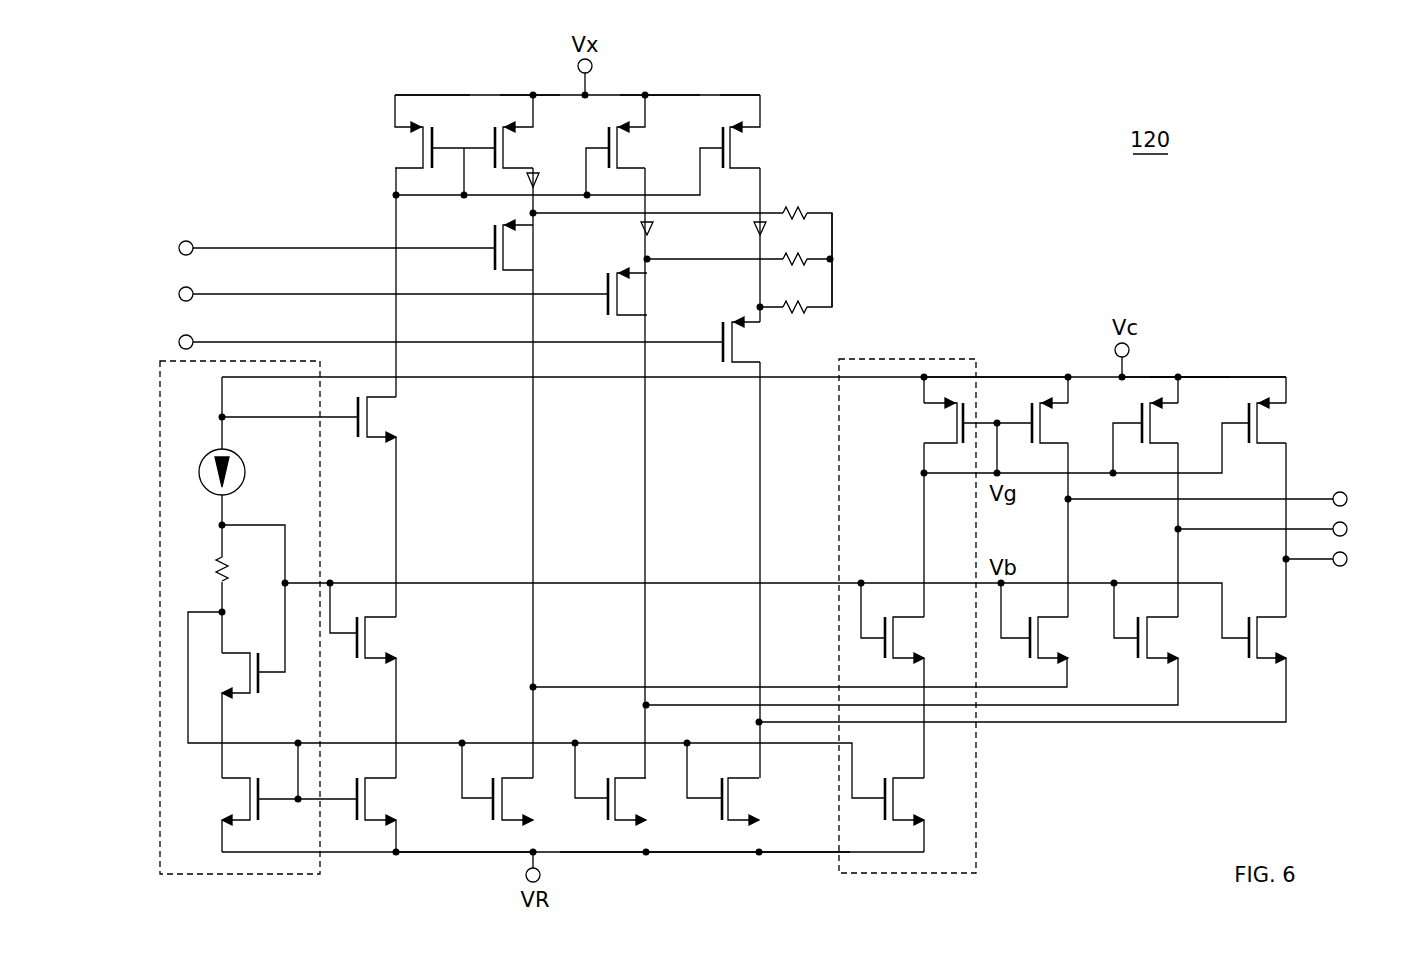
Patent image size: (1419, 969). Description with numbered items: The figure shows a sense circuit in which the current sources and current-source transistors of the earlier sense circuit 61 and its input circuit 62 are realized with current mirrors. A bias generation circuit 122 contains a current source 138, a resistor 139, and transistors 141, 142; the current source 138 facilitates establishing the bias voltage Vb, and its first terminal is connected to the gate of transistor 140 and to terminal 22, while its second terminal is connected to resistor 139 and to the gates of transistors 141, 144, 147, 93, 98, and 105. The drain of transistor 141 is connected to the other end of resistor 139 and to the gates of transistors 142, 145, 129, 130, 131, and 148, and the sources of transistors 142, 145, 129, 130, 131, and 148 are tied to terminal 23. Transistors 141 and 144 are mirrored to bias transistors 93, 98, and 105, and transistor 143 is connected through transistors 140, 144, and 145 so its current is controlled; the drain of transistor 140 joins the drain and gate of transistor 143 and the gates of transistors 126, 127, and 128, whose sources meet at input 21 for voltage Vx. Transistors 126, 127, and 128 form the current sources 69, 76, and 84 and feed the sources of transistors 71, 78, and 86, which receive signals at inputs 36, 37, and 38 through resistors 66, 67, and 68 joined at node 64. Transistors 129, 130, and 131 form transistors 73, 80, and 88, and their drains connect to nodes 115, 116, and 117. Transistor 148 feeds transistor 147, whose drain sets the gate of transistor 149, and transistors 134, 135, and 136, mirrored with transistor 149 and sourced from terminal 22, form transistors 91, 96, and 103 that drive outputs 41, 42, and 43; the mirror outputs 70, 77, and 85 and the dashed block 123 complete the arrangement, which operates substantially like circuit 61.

The input 21 is at (593, 68).
The terminal 22 is at (1113, 350).
The terminal 23 is at (525, 878).
The input 36 is at (180, 241).
The input 37 is at (180, 287).
The input 38 is at (180, 335).
The first output terminal 41 is at (1346, 492).
The second output terminal 42 is at (1346, 522).
The third output terminal 43 is at (1346, 552).
The sense circuit 61 is at (405, 87).
The input circuit 62 is at (1205, 363).
The node 64 is at (833, 257).
The resistor 66 is at (797, 205).
The resistor 67 is at (797, 250).
The third resistor 68 is at (797, 298).
The current source 69 is at (520, 87).
The first current mirror output 70 is at (540, 180).
The transistor 71 is at (530, 245).
The transistor 73 is at (458, 859).
The current source 76 is at (655, 87).
The second current mirror output 77 is at (654, 228).
The transistor 78 is at (648, 290).
The transistor 80 is at (640, 859).
The current source 84 is at (752, 87).
The third current mirror output 85 is at (757, 228).
The transistor 86 is at (765, 333).
The transistor 88 is at (757, 859).
The transistor 91 is at (1057, 363).
The transistor 93 is at (1070, 638).
The transistor 96 is at (1178, 365).
The transistor 98 is at (1180, 638).
The transistor 103 is at (1278, 363).
The transistor 105 is at (1290, 638).
The node 115 is at (530, 688).
The node 116 is at (643, 706).
The node 117 is at (756, 723).
The bias generation circuit 122 is at (245, 874).
The cascode bias circuit 123 is at (976, 855).
The transistor 126 is at (535, 150).
The transistor 127 is at (645, 150).
The transistor 128 is at (762, 148).
The transistor 129 is at (535, 798).
The transistor 130 is at (648, 798).
The transistor 131 is at (760, 798).
The transistor 134 is at (1068, 423).
The transistor 135 is at (1178, 423).
The transistor 136 is at (1288, 423).
The current source 138 is at (246, 472).
The resistor 139 is at (213, 570).
The transistor 140 is at (400, 418).
The transistor 141 is at (262, 682).
The transistor 142 is at (220, 798).
The transistor 143 is at (400, 150).
The transistor 144 is at (400, 638).
The transistor 145 is at (400, 800).
The transistor 147 is at (926, 638).
The transistor 148 is at (926, 800).
The transistor 149 is at (920, 425).